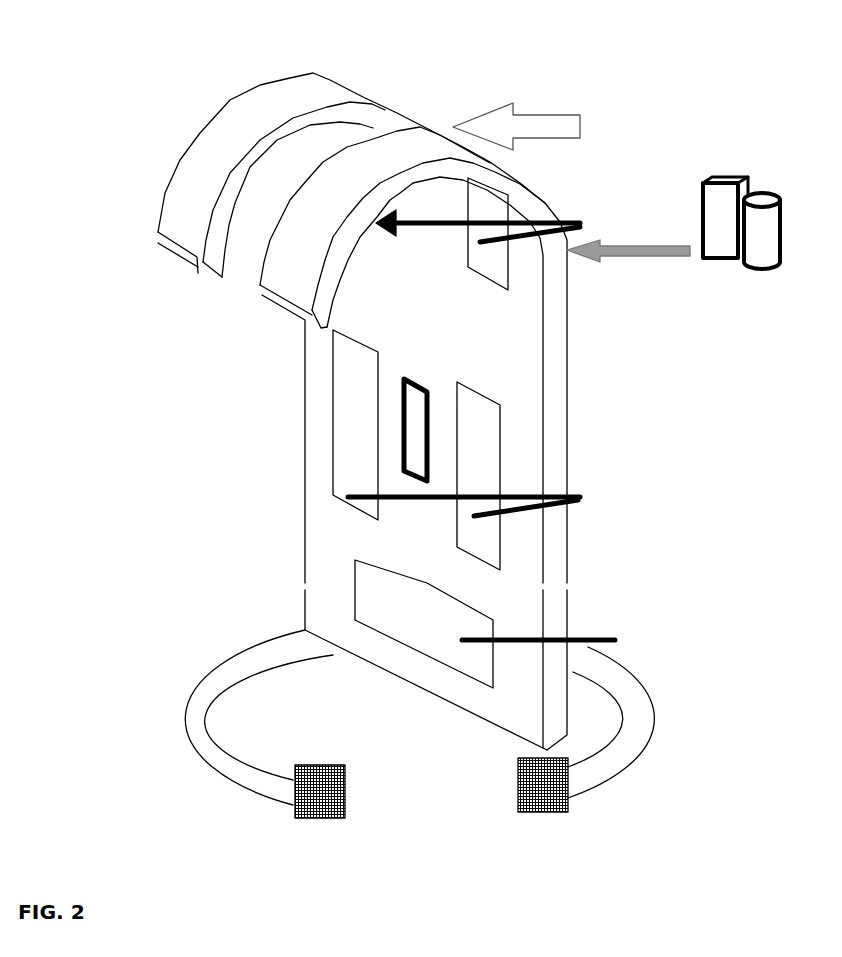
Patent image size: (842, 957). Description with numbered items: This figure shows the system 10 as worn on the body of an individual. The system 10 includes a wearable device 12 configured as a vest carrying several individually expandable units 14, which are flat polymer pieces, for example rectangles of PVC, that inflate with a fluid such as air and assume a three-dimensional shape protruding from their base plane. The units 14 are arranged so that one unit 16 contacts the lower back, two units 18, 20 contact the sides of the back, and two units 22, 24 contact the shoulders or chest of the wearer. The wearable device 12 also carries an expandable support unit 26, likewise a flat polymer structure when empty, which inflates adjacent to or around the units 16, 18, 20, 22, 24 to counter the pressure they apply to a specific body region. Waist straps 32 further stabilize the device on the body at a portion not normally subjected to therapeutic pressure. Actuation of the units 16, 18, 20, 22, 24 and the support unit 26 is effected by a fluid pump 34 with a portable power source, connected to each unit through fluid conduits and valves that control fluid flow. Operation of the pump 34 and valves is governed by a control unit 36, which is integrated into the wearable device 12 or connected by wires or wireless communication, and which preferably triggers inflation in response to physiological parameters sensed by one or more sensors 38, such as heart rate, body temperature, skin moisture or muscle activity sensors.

The system 10 is at (372, 39).
The wearable device 12 is at (533, 122).
The individually expandable units 14 is at (501, 426).
The lower back unit 16 is at (407, 620).
The side of back unit 18 is at (480, 458).
The side of back unit 20 is at (353, 440).
The shoulder/chest unit 22 is at (490, 203).
The shoulder/chest unit 24 is at (520, 253).
The expandable support unit 26 is at (440, 310).
The waist straps 32 is at (257, 783).
The fluid pump 34 is at (762, 250).
The control unit 36 is at (728, 173).
The sensors 38 is at (417, 425).